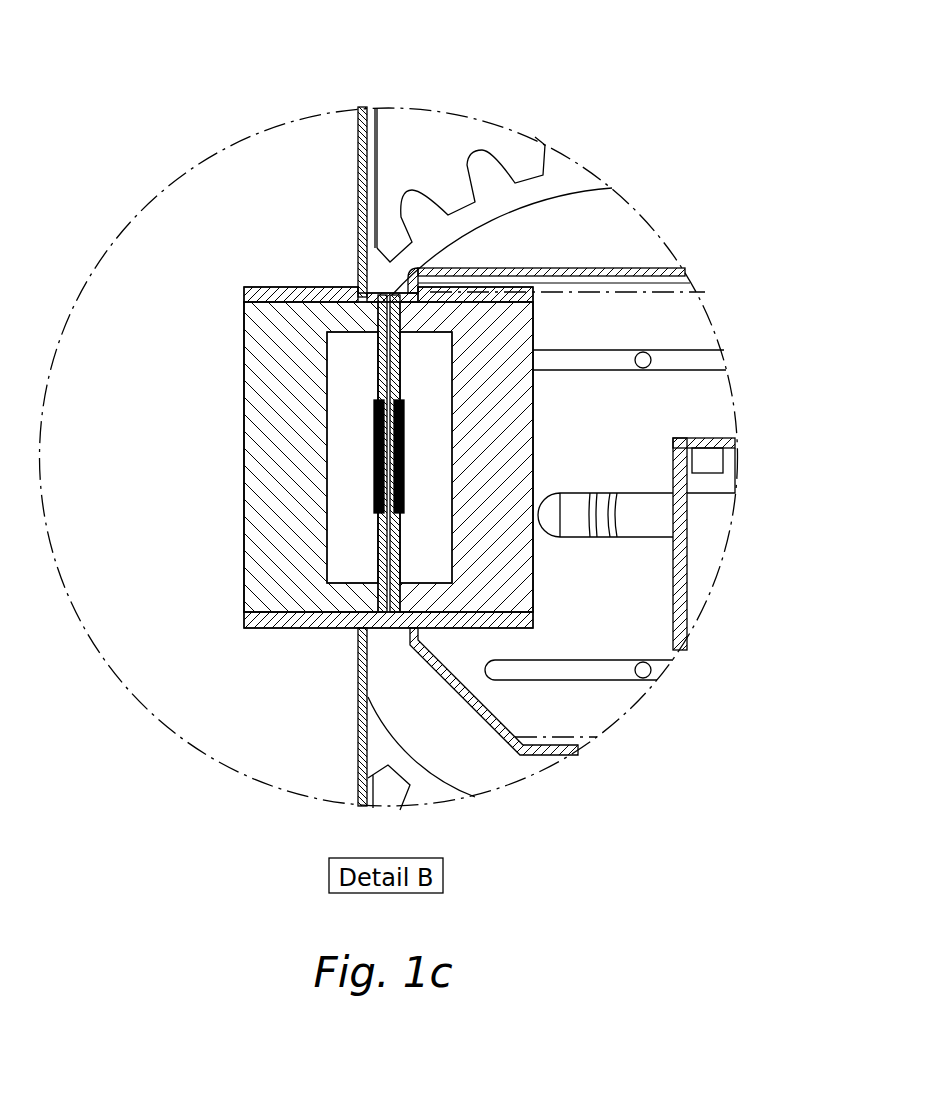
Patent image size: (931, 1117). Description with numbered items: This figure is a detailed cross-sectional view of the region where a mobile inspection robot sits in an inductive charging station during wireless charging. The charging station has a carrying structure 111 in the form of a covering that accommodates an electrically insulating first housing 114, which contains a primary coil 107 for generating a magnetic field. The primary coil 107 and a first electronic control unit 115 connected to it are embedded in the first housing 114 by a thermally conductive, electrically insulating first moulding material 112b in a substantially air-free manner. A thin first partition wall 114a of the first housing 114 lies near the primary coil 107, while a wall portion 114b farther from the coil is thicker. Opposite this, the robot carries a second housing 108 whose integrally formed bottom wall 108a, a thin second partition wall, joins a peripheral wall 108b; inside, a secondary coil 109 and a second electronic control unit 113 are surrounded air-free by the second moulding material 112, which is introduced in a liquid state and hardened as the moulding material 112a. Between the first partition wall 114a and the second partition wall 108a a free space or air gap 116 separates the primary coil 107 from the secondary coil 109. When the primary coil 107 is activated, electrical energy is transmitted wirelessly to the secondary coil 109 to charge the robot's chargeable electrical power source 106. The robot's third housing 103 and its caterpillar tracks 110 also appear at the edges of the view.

The third housing 103 is at (418, 150).
The chargeable electrical power source 106 is at (707, 545).
The primary coil 107 is at (377, 437).
The second housing 108 is at (535, 620).
The bottom wall 108a is at (400, 353).
The peripheral wall 108b is at (487, 625).
The secondary coil 109 is at (400, 437).
The caterpillar tracks 110 is at (485, 165).
The carrying structure 111 is at (357, 148).
The second moulding material 112 is at (262, 470).
The second moulding material 112a is at (497, 565).
The first moulding material 112b is at (272, 519).
The second electronic control unit 113 is at (420, 378).
The first housing 114 is at (242, 622).
The first partition wall 114a is at (377, 355).
The wall portion 114b is at (297, 625).
The first electronic control unit 115 is at (357, 378).
The air gap 116 is at (387, 538).